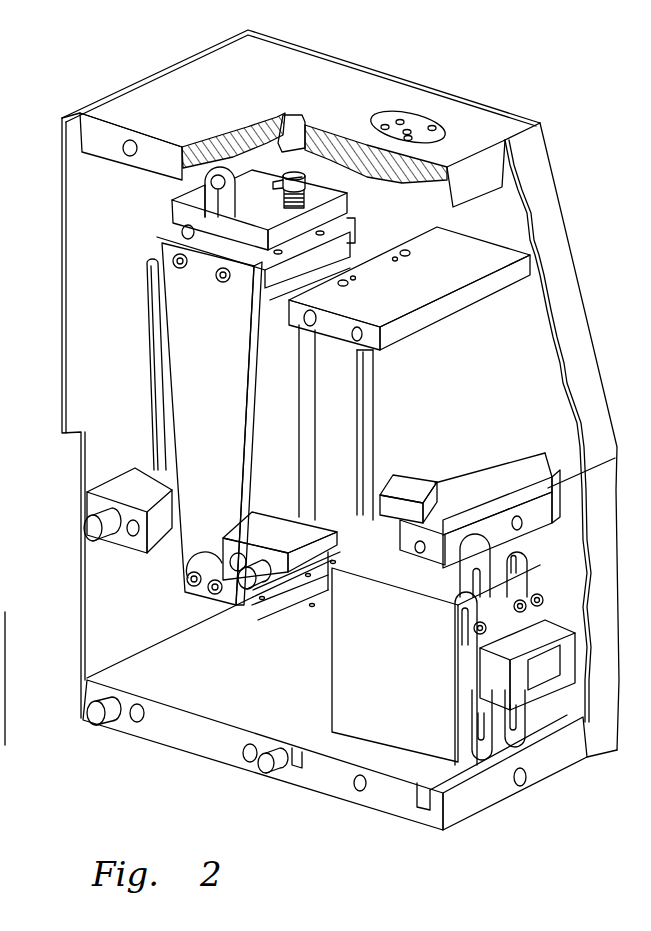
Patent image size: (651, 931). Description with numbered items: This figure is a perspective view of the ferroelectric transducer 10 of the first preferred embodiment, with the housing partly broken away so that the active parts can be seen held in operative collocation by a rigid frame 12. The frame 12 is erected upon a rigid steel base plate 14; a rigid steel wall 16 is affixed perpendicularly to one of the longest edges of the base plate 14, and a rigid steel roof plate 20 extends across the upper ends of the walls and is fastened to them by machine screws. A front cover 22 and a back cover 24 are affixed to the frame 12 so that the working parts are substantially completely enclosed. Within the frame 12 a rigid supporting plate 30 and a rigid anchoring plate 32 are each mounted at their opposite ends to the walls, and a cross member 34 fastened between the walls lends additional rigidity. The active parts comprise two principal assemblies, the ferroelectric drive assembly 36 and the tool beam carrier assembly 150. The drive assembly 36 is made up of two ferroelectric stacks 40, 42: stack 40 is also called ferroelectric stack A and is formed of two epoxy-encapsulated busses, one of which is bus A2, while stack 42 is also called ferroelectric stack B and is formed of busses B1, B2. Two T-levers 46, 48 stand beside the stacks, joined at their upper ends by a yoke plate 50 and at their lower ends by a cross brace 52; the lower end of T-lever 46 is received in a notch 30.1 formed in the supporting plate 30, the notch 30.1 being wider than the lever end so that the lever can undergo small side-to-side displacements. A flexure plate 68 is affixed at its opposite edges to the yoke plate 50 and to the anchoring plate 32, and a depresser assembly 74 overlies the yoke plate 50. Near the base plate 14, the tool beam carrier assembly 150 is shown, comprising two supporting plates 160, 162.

The ferroelectric transducer 10 is at (165, 778).
The rigid frame 12 is at (172, 103).
The rigid steel base plate 14 is at (465, 810).
The rigid steel wall 16 is at (524, 398).
The rigid steel roof plate 20 is at (232, 101).
The front cover 22 is at (605, 745).
The back cover 24 is at (88, 180).
The rigid supporting plate 30 is at (130, 487).
The notch 30.1 is at (185, 548).
The rigid anchoring plate 32 is at (462, 278).
The cross member 34 is at (540, 466).
The ferroelectric drive assembly 36 is at (386, 393).
The ferroelectric stack 40 is at (163, 400).
The ferroelectric stack 42 is at (340, 433).
The T-lever 46 is at (217, 375).
The T-lever 48 is at (355, 246).
The yoke plate 50 is at (322, 253).
The cross brace 52 is at (248, 598).
The flexure plate 68 is at (330, 288).
The depresser assembly 74 is at (160, 213).
The tool beam carrier assembly 150 is at (0, 508).
The supporting plate 160 is at (412, 679).
The supporting plate 162 is at (493, 560).
The ferroelectric stack A is at (183, 334).
The epoxy-encapsulated bus A2 is at (150, 294).
The ferroelectric stack B is at (355, 372).
The epoxy-encapsulated bus B1 is at (300, 486).
The epoxy-encapsulated bus B2 is at (373, 443).